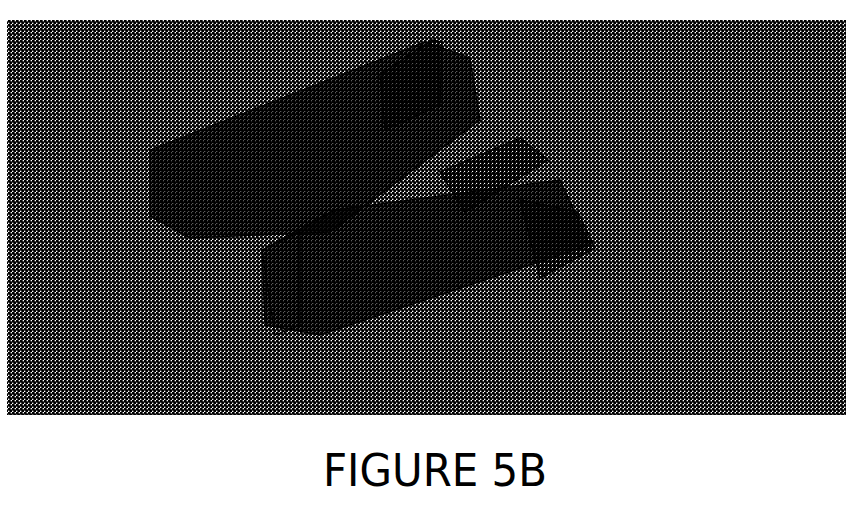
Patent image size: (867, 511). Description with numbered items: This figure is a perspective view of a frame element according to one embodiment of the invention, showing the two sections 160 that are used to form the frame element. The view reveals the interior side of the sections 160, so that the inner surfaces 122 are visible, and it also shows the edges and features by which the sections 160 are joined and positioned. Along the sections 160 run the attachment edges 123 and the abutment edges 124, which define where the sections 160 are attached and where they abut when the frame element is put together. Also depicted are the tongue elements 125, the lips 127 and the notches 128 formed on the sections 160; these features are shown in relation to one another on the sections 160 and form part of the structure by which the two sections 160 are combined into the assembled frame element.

The inner surface 122 is at (343, 260).
The attachment edge 123 is at (475, 262).
The abutment edge 124 is at (158, 190).
The tongue element 125 is at (460, 258).
The lip 127 is at (423, 260).
The notch 128 is at (337, 205).
The section 160 is at (430, 100).